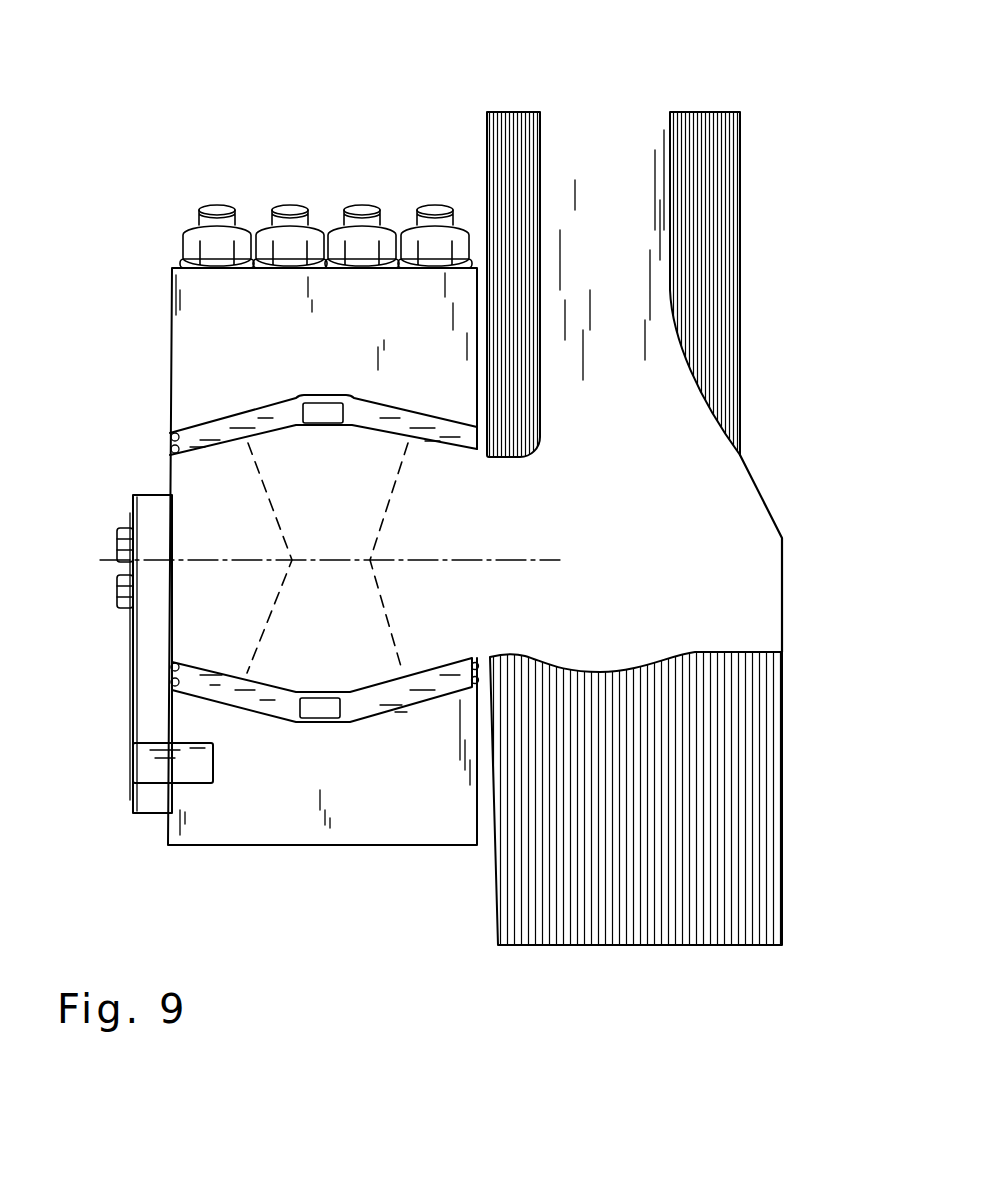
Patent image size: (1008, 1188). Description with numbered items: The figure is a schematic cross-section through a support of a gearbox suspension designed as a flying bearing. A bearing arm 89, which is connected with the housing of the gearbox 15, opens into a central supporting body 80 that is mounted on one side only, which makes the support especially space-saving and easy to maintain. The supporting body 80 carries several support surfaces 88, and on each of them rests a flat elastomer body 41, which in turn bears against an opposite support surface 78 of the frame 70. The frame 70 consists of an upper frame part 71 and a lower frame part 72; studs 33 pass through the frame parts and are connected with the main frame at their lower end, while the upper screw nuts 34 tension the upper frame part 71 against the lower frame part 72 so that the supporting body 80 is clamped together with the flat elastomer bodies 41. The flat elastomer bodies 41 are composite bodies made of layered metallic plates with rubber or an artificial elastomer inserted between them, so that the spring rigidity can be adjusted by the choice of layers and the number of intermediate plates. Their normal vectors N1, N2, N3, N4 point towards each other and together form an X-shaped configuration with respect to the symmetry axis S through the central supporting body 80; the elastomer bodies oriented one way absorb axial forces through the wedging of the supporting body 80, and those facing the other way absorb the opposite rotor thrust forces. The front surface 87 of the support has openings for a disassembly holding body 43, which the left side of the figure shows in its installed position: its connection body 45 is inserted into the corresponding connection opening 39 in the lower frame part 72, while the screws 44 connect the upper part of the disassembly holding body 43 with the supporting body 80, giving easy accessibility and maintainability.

The frame 70 is at (152, 120).
The upper frame part 71 is at (183, 307).
The lower frame part 72 is at (222, 822).
The studs 33 is at (213, 205).
The upper screw nuts 34 is at (240, 227).
The support surface 78 is at (367, 393).
The flat elastomer body 41 is at (393, 418).
The support surface 88 is at (210, 448).
The front surface 87 is at (165, 485).
The central supporting body 80 is at (213, 616).
The screws 44 is at (118, 540).
The connection body 45 is at (140, 763).
The disassembly holding body 43 is at (147, 730).
The connection opening 39 is at (218, 823).
The bearing arm 89 is at (608, 353).
The gearbox 15 is at (758, 770).
The normal vector N1 is at (267, 502).
The normal vector N2 is at (387, 500).
The normal vector N3 is at (257, 590).
The normal vector N4 is at (390, 620).
The symmetry axis S is at (518, 558).